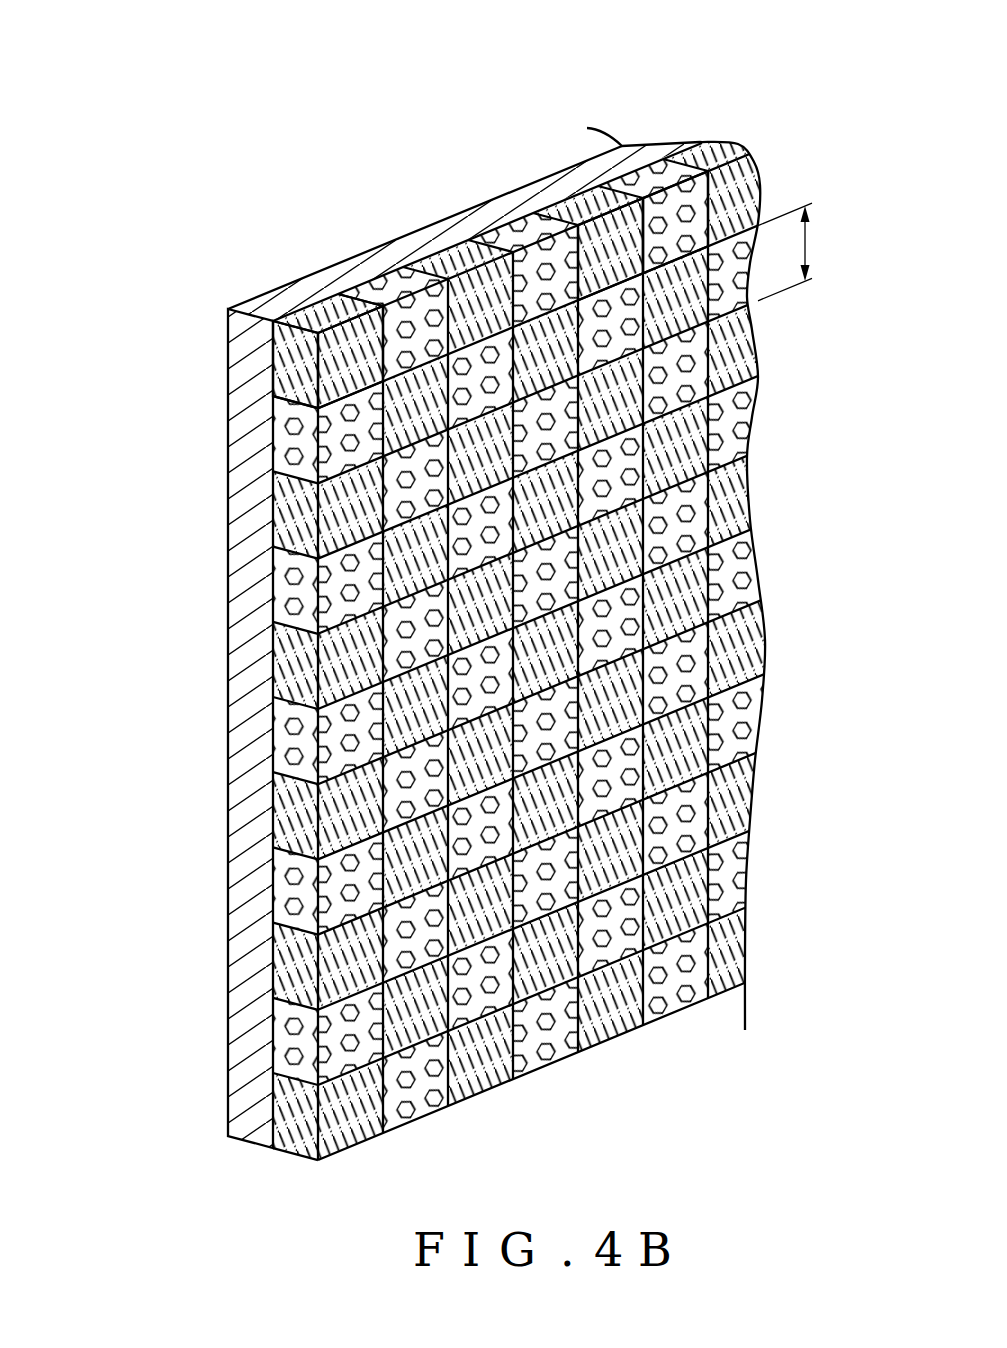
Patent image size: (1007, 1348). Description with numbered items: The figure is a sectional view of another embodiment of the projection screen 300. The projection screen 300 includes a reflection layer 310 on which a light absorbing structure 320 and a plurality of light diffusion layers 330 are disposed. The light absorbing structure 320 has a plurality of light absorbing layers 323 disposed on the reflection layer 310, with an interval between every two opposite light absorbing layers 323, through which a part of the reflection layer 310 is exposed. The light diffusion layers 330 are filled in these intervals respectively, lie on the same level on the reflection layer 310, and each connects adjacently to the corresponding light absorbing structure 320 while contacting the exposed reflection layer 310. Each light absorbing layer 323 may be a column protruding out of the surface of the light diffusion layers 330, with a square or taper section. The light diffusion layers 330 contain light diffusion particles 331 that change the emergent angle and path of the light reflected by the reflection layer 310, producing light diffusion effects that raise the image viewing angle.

The projection screen 300 is at (150, 38).
The reflection layer 310 is at (248, 860).
The light absorbing structure 320 is at (352, 171).
The light absorbing layer 323 is at (438, 253).
The light diffusion layer 330 is at (650, 175).
The light diffusion particles 331 is at (533, 210).